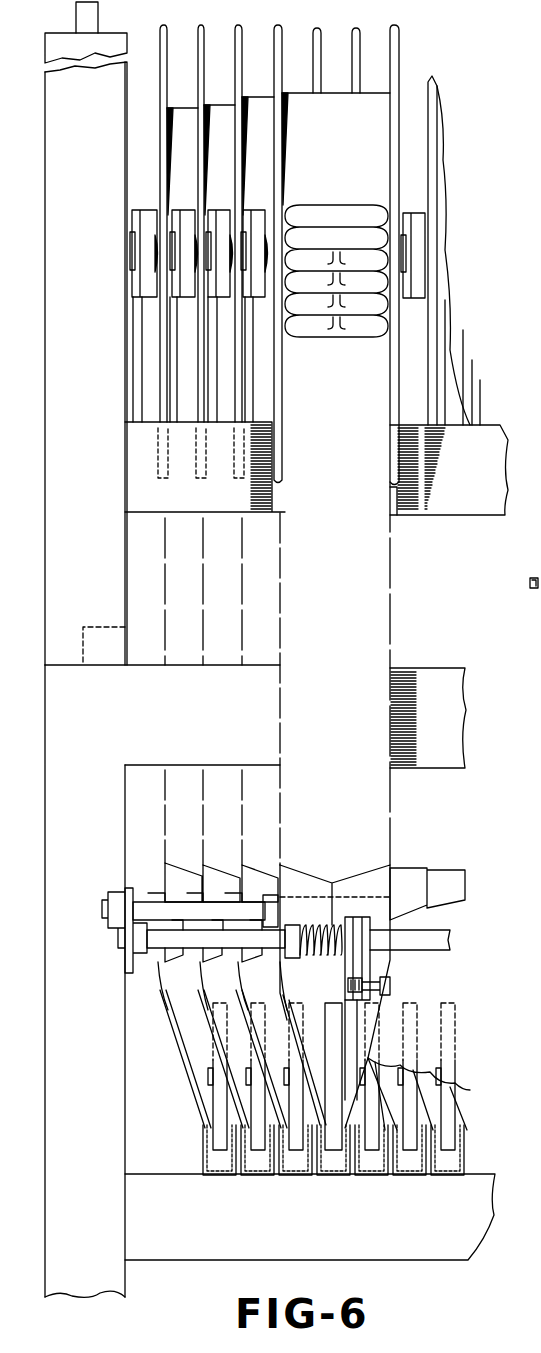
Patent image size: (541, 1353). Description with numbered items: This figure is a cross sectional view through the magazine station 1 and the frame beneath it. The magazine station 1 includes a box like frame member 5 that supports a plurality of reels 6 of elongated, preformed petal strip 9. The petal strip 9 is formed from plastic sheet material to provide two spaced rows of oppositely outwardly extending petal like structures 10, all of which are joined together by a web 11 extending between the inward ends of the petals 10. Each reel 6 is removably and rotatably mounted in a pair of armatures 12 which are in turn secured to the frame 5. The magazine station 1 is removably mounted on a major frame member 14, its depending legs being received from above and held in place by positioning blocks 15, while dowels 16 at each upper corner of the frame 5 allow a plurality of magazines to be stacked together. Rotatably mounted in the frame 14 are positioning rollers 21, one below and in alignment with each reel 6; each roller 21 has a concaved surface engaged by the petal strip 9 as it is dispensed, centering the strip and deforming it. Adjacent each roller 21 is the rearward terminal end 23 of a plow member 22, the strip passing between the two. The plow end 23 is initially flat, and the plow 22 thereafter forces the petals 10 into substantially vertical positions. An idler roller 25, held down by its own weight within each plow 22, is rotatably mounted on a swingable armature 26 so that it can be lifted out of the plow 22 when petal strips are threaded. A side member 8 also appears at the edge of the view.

The magazine station 1 is at (428, 66).
The box like frame member 5 is at (86, 349).
The reel 6 is at (392, 62).
The side member 8 is at (535, 412).
The petal strip 9 is at (248, 590).
The petal like structures 10 is at (365, 320).
The web 11 is at (337, 234).
The armatures 12 is at (172, 370).
The major frame member 14 is at (92, 805).
The positioning blocks 15 is at (104, 617).
The dowels 16 is at (78, 16).
The positioning rollers 21 is at (180, 876).
The plow member 22 is at (196, 1106).
The rearward terminal end 23 is at (363, 900).
The idler roller 25 is at (218, 1115).
The swingable armature 26 is at (343, 1002).